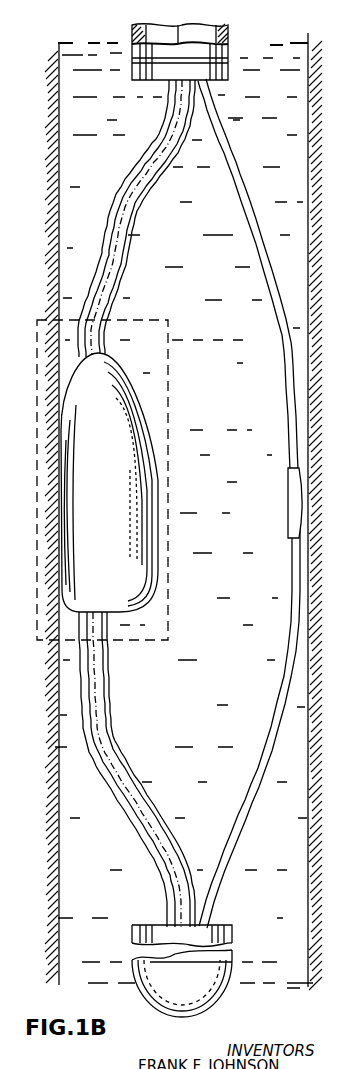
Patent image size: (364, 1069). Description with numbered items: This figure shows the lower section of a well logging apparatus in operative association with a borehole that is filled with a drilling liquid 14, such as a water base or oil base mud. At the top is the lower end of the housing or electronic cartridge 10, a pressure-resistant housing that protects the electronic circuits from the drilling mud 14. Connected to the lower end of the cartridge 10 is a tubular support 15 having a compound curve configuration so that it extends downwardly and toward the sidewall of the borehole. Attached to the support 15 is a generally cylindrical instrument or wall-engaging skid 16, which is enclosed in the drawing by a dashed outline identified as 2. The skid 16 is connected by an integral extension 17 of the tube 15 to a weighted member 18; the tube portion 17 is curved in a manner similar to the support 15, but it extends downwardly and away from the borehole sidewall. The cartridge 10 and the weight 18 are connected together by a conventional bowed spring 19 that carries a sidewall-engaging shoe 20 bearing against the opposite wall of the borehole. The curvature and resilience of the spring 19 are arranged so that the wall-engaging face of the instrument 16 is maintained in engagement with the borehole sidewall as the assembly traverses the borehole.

The instrument assembly (dashed enclosure) 2 is at (152, 320).
The housing 10 is at (230, 51).
The drilling liquid 14 is at (125, 121).
The tubular support 15 is at (128, 171).
The wall-engaging skid 16 is at (147, 403).
The integral extension 17 is at (112, 694).
The weighted member 18 is at (232, 932).
The bowed spring 19 is at (288, 366).
The sidewall-engaging shoe 20 is at (290, 481).